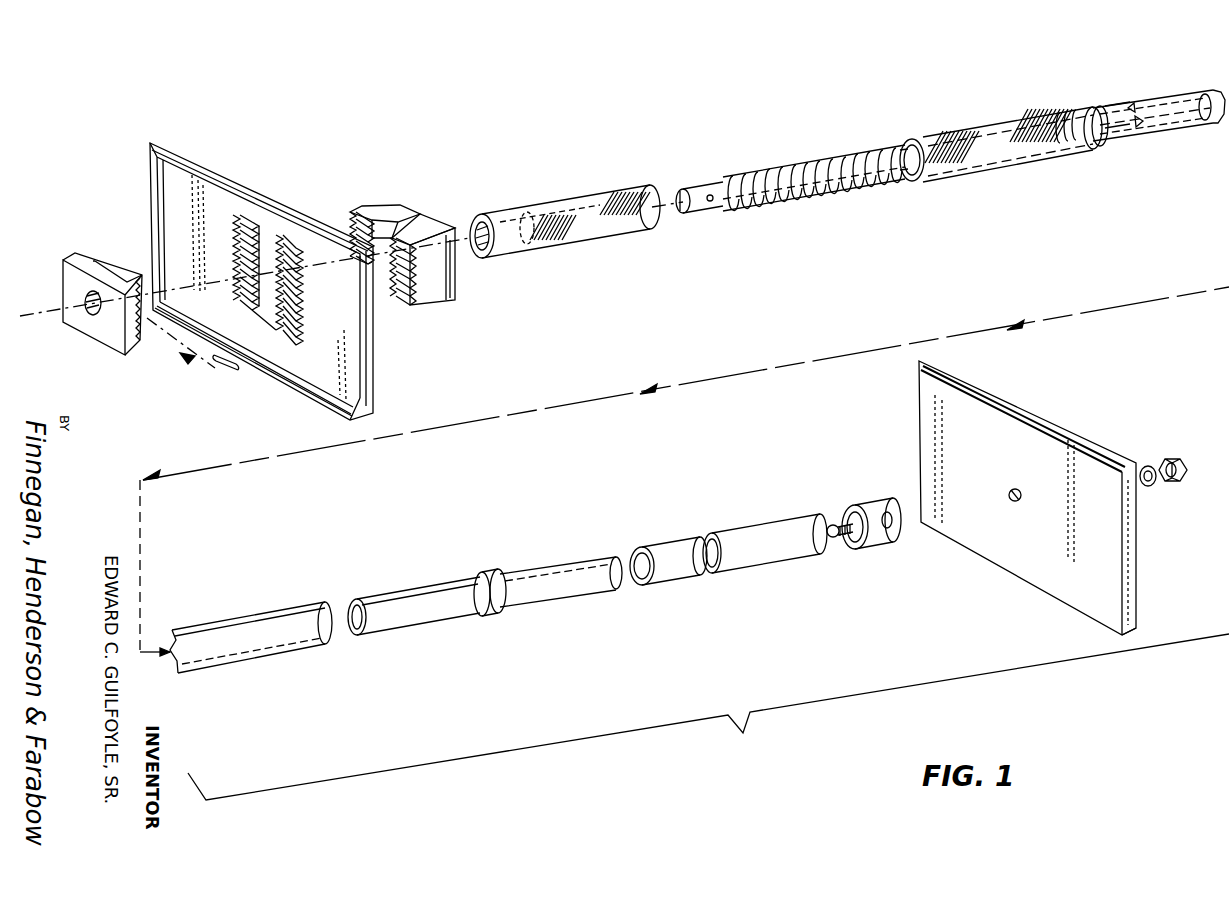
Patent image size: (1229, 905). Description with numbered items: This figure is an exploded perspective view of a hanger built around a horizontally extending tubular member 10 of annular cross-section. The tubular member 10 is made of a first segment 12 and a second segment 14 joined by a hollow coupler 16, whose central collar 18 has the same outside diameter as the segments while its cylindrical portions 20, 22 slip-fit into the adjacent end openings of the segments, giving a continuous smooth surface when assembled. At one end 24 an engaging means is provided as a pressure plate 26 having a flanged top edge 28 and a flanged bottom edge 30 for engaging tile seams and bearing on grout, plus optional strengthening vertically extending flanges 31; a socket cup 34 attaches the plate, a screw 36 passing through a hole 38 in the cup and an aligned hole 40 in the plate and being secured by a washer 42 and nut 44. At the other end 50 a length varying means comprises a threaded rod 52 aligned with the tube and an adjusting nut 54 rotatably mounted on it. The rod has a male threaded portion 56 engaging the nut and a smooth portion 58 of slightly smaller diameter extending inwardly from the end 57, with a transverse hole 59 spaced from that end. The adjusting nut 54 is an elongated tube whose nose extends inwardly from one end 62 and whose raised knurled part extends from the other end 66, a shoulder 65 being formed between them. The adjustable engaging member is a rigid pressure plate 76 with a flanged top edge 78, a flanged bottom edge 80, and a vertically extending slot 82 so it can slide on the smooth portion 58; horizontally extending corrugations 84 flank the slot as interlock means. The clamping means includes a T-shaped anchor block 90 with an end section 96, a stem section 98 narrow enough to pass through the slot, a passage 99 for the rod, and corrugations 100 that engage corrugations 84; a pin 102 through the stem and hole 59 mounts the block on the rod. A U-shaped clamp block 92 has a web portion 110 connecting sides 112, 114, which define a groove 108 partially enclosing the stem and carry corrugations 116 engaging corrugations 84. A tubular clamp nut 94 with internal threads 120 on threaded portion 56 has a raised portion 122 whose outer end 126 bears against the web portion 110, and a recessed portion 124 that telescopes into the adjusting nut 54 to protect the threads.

The tubular member 10 is at (1153, 115).
The first segment 12 is at (260, 660).
The second segment 14 is at (770, 557).
The hollow coupler 16 is at (490, 592).
The central collar 18 is at (497, 616).
The cylindrical portion 20 is at (445, 616).
The cylindrical portion 22 is at (612, 592).
The end of tubular member 24 is at (825, 512).
The pressure plate 26 is at (1059, 499).
The flanged top edge 28 is at (1065, 425).
The flanged bottom edge 30 is at (1142, 625).
The vertically extending flanges 31 is at (1138, 540).
The socket cup 34 is at (880, 521).
The screw 36 is at (838, 515).
The hole 38 is at (895, 537).
The hole 40 is at (1033, 561).
The washer 42 is at (1148, 464).
The nut 44 is at (1190, 462).
The other end of tubular member 50 is at (1100, 148).
The threaded rod 52 is at (777, 164).
The adjusting nut 54 is at (1015, 143).
The male threaded portion 56 is at (855, 188).
The end of rod 57 is at (688, 218).
The smooth portion 58 is at (707, 200).
The hole 59 is at (715, 205).
The end of adjusting nut 62 is at (1145, 121).
The shoulder 65 is at (1090, 153).
The other end of adjusting nut 66 is at (905, 178).
The pressure plate 76 is at (297, 284).
The flanged top edge 78 is at (245, 185).
The flanged bottom edge 80 is at (300, 390).
The vertically extending slot 82 is at (278, 225).
The horizontally extending corrugations 84 is at (275, 326).
The anchor block 90 is at (89, 296).
The clamp block 92 is at (422, 256).
The clamp nut 94 is at (569, 224).
The end section 96 is at (72, 258).
The stem section 98 is at (115, 265).
The passage 99 is at (85, 315).
The horizontally extending corrugations 100 is at (142, 325).
The pin 102 is at (228, 370).
The groove 108 is at (410, 215).
The web portion 110 is at (425, 232).
The side 112 is at (390, 205).
The side 114 is at (425, 305).
The horizontally extending corrugations 116 is at (351, 211).
The internal threads 120 is at (478, 250).
The raised portion 122 is at (545, 200).
The recessed portion 124 is at (625, 190).
The outer end 126 is at (478, 220).